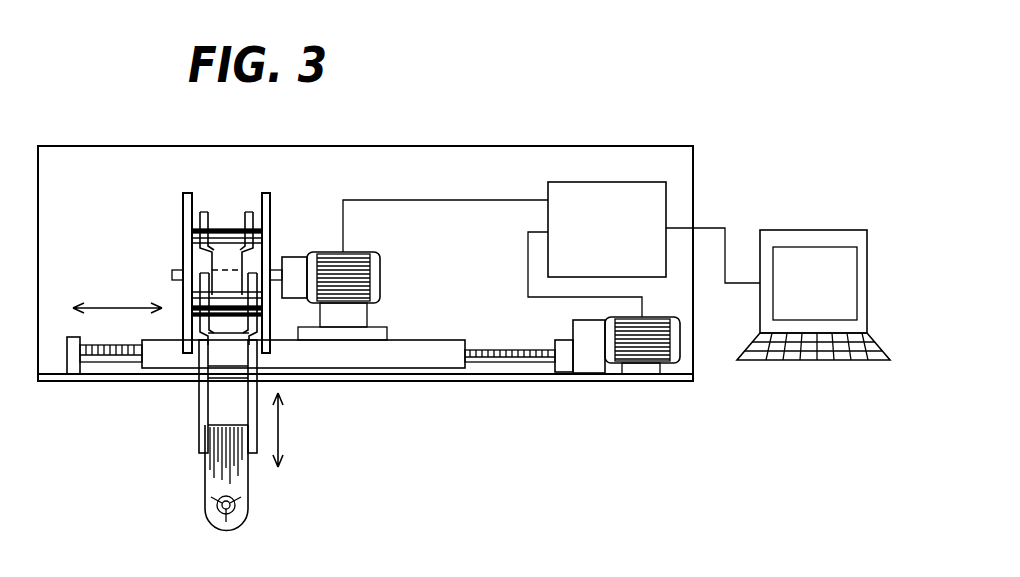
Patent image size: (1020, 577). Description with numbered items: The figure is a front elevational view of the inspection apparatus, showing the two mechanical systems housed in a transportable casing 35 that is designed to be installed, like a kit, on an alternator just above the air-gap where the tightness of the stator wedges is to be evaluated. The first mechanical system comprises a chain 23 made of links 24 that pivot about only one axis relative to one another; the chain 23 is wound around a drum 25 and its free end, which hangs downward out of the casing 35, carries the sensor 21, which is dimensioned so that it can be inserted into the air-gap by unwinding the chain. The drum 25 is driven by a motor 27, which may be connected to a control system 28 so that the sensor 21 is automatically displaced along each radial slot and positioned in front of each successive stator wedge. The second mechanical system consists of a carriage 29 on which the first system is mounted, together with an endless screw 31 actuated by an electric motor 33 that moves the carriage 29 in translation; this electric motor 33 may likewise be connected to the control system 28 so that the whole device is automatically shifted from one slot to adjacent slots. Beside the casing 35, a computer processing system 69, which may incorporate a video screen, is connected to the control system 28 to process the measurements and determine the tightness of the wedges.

The sensor 21 is at (250, 488).
The chain 23 is at (199, 398).
The links 24 is at (227, 218).
The drum 25 is at (183, 200).
The motor 27 is at (380, 262).
The control system 28 is at (628, 182).
The carriage 29 is at (445, 350).
The endless screw 31 is at (493, 350).
The electric motor 33 is at (688, 330).
The casing 35 is at (426, 146).
The computer processing system 69 is at (820, 230).